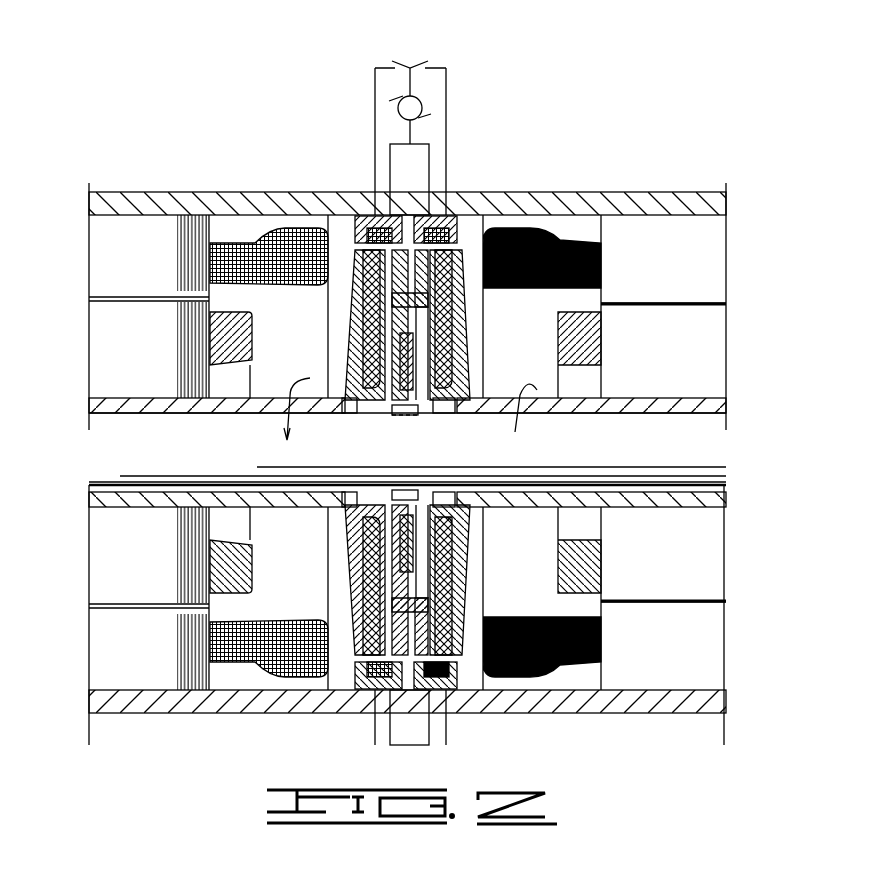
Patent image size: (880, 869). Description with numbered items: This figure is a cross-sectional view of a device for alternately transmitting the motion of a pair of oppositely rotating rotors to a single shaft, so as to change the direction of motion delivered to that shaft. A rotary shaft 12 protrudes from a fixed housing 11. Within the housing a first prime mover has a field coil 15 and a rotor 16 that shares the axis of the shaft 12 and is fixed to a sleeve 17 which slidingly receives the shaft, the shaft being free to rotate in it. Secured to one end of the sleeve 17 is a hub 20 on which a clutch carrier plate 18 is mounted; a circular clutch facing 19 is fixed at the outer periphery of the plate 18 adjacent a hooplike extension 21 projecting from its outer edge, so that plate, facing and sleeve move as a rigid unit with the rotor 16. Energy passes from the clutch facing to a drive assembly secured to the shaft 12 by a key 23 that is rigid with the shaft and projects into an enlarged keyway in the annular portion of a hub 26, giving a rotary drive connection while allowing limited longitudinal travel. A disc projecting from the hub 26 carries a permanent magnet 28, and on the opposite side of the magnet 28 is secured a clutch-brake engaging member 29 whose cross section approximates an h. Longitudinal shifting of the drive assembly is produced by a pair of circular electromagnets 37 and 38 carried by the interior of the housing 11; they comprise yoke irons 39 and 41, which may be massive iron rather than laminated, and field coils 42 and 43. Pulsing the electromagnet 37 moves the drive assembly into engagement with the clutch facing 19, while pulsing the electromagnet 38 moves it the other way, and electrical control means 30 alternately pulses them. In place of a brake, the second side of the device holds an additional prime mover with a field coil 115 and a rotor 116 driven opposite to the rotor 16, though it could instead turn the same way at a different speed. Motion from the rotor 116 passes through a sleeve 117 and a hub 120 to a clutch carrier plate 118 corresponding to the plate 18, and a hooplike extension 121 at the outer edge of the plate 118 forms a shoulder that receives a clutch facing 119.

The fixed housing 11 is at (715, 210).
The rotary shaft 12 is at (713, 470).
The field coil 15 is at (713, 270).
The rotor 16 is at (713, 360).
The sleeve 17 is at (715, 408).
The clutch carrier plate 18 is at (425, 340).
The clutch facing 19 is at (455, 296).
The hub 20 is at (455, 530).
The hooplike extension 21 is at (450, 630).
The key 23 is at (395, 415).
The hub 26 is at (420, 405).
The permanent magnet 28 is at (420, 357).
The clutch-brake engaging member 29 is at (440, 325).
The electrical control means 30 is at (456, 56).
The electromagnet 37 is at (440, 700).
The electromagnet 38 is at (374, 700).
The yoke iron 39 is at (440, 216).
The yoke iron 41 is at (400, 215).
The field coil 42 is at (452, 225).
The field coil 43 is at (378, 228).
The field coil 115 is at (105, 235).
The rotor 116 is at (105, 340).
The sleeve 117 is at (100, 405).
The clutch carrier plate 118 is at (345, 348).
The clutch facing 119 is at (352, 298).
The hub 120 is at (372, 413).
The hooplike extension 121 is at (358, 216).